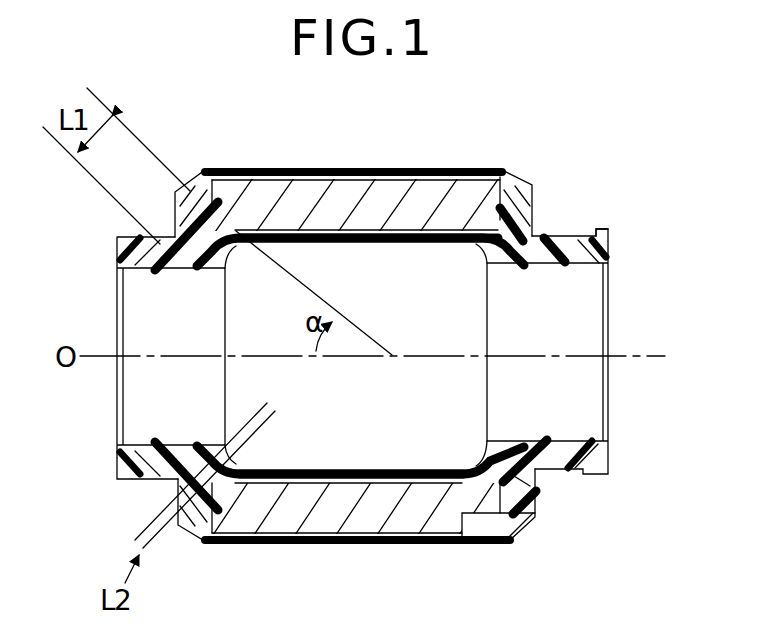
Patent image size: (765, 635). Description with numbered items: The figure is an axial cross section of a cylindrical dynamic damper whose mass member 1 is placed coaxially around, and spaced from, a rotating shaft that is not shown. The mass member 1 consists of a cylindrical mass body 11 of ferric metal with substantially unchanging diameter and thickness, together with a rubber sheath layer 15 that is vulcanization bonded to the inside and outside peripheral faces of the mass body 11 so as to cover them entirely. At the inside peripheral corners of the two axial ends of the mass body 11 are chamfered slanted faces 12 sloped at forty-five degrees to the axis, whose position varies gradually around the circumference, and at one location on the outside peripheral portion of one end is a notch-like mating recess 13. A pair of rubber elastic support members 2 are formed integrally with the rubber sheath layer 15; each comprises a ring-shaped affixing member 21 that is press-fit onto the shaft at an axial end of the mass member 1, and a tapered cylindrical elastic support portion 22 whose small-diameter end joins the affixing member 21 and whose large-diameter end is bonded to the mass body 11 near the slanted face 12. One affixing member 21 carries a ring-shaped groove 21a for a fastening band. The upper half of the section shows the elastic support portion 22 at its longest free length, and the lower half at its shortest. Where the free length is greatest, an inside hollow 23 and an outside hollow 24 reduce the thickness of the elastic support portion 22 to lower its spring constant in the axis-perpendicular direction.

The mass member 1 is at (374, 166).
The rubber elastic support member 2 is at (176, 231).
The mass body 11 is at (334, 197).
The slanted face 12 is at (222, 214).
The mating recess 13 is at (483, 517).
The rubber sheath layer 15 is at (421, 171).
The affixing member 21 is at (122, 245).
The ring-shaped groove 21a is at (597, 231).
The elastic support portion 22 is at (192, 201).
The inside hollow 23 is at (215, 262).
The outside hollow 24 is at (197, 188).